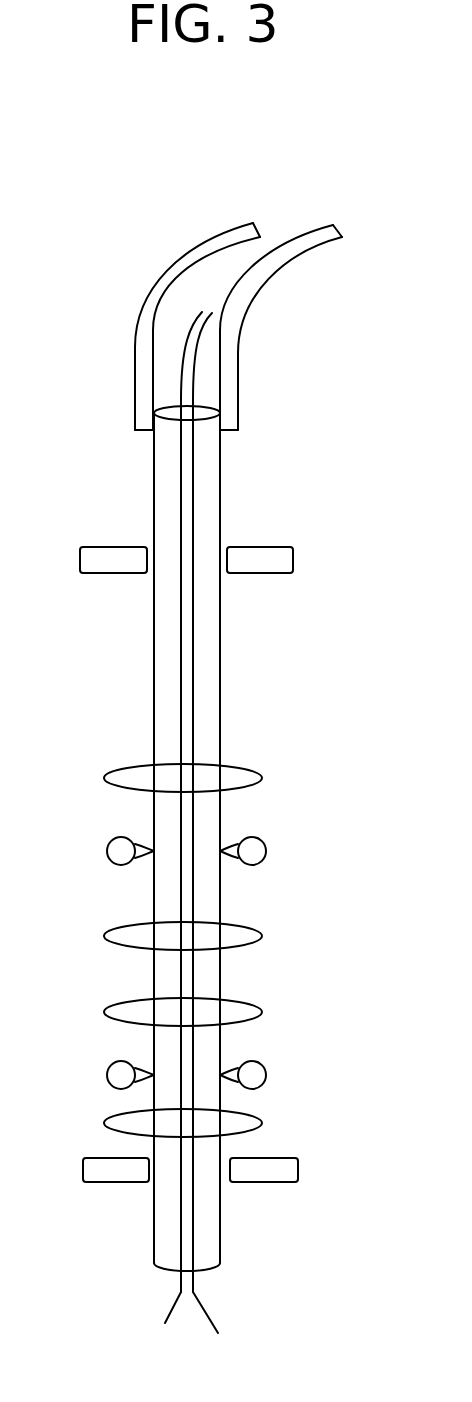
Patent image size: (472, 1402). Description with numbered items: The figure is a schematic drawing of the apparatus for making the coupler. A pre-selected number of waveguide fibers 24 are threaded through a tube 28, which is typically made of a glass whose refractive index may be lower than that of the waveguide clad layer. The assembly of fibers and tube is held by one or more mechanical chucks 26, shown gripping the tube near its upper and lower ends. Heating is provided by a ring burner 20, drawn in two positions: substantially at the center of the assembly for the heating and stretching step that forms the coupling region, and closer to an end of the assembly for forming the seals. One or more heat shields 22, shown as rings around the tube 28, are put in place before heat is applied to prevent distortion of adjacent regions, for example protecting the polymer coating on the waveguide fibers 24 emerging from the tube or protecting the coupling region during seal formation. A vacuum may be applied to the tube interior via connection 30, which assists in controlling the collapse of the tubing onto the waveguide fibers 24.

The ring burner 20 is at (266, 851).
The heat shield 22 is at (262, 778).
The waveguide fibers 24 is at (207, 1312).
The mechanical chuck 26 is at (272, 1182).
The tube 28 is at (210, 495).
The connection 30 is at (238, 265).